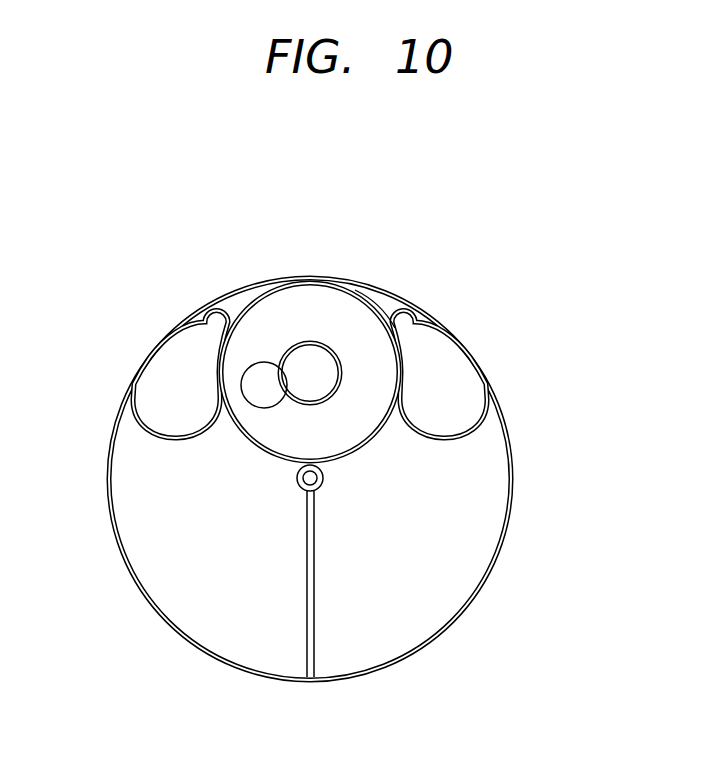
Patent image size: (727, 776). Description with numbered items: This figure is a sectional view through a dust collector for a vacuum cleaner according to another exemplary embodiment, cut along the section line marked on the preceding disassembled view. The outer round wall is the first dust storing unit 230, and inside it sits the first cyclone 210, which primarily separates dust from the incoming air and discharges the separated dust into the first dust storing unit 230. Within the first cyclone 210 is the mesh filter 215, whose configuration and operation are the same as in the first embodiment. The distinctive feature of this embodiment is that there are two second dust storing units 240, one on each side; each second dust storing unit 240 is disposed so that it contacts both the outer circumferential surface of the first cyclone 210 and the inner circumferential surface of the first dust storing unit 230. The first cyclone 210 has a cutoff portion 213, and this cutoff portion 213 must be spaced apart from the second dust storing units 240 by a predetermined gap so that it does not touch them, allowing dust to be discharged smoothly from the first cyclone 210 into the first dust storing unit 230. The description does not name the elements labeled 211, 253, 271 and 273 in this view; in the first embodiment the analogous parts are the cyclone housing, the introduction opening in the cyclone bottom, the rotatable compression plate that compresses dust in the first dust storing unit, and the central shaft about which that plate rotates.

The first cyclone 210 is at (263, 215).
The drum body 211 is at (357, 447).
The cutoff portion 213 is at (378, 309).
The mesh filter 215 is at (295, 345).
The first dust storing unit 230 is at (170, 624).
The second dust storing units 240 is at (148, 436).
The roller 253 is at (263, 362).
The support rod 271 is at (313, 612).
The pivot hinge 273 is at (323, 485).